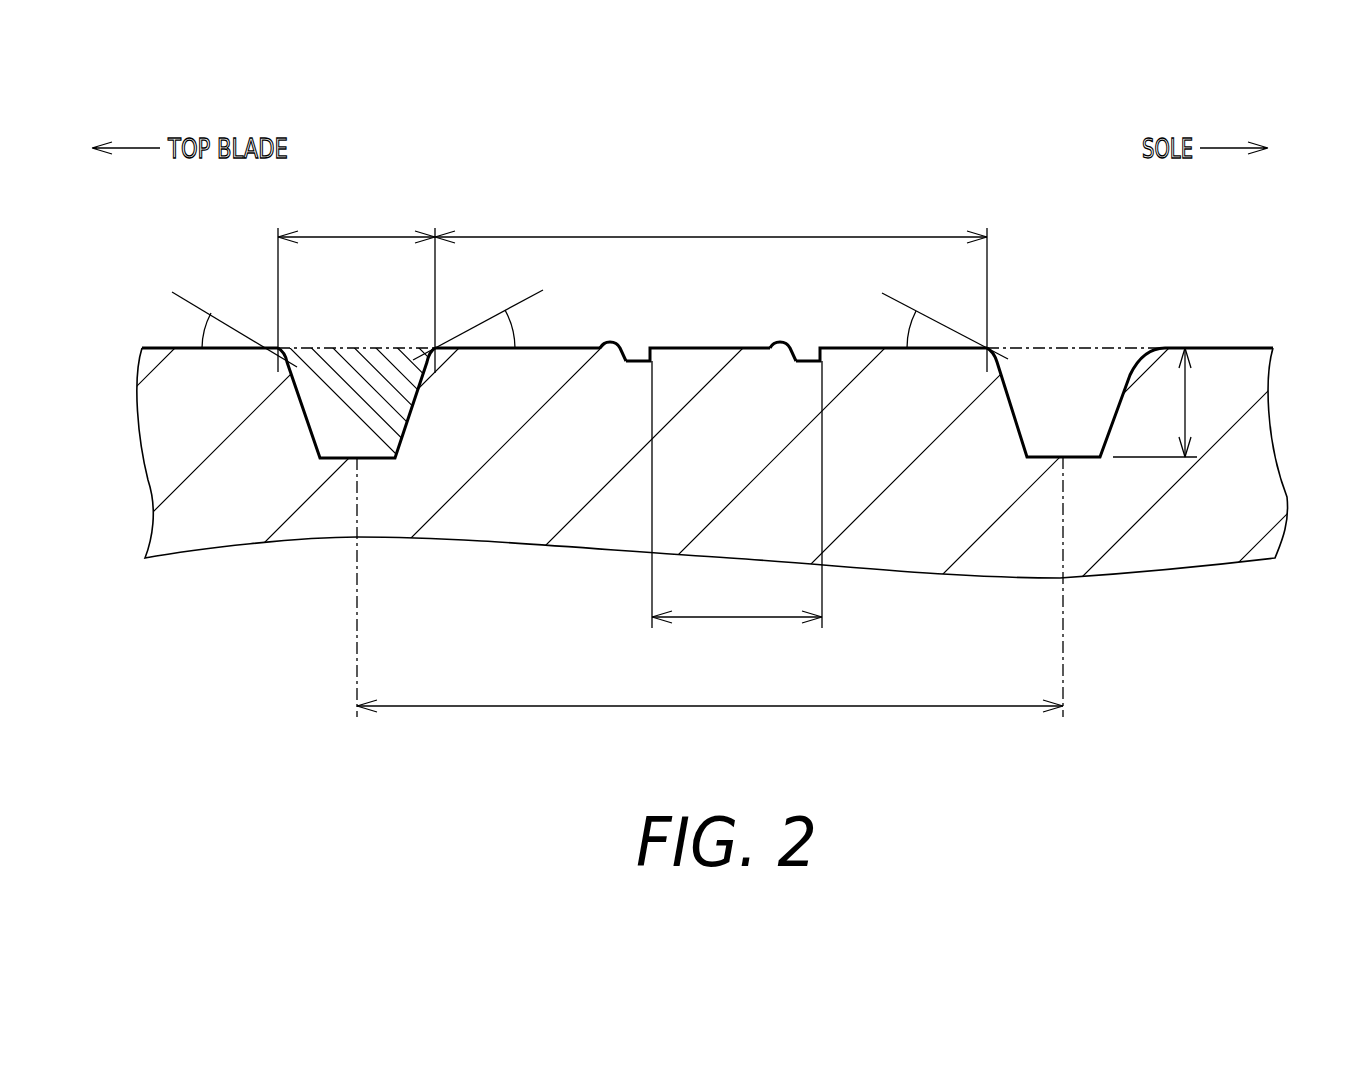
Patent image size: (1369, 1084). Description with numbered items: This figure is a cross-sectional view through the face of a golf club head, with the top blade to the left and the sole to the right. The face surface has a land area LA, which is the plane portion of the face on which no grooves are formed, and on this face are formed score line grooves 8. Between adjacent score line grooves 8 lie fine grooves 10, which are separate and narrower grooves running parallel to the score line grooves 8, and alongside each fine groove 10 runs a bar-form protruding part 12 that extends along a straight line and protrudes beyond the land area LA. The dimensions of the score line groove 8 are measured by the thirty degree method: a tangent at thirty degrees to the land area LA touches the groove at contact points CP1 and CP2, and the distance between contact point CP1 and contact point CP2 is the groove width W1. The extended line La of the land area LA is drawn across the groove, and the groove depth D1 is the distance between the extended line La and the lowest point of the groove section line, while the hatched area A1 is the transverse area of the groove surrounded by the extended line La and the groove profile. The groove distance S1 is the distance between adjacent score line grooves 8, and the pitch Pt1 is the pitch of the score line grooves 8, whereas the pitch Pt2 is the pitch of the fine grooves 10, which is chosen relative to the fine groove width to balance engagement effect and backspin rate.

The score line groove 8 is at (1069, 286).
The fine groove 10 is at (636, 360).
The protruding part 12 is at (610, 341).
The area of transverse plane of the score line groove A1 is at (390, 436).
The contact point CP1 is at (280, 355).
The contact point CP2 is at (437, 355).
The extended line of the land area La is at (323, 347).
The land area LA is at (688, 348).
The groove depth D1 is at (1169, 402).
The groove width W1 is at (356, 290).
The groove distance S1 is at (711, 291).
The pitch of the score line groove Pt1 is at (710, 600).
The pitch of the fine groove Pt2 is at (737, 506).